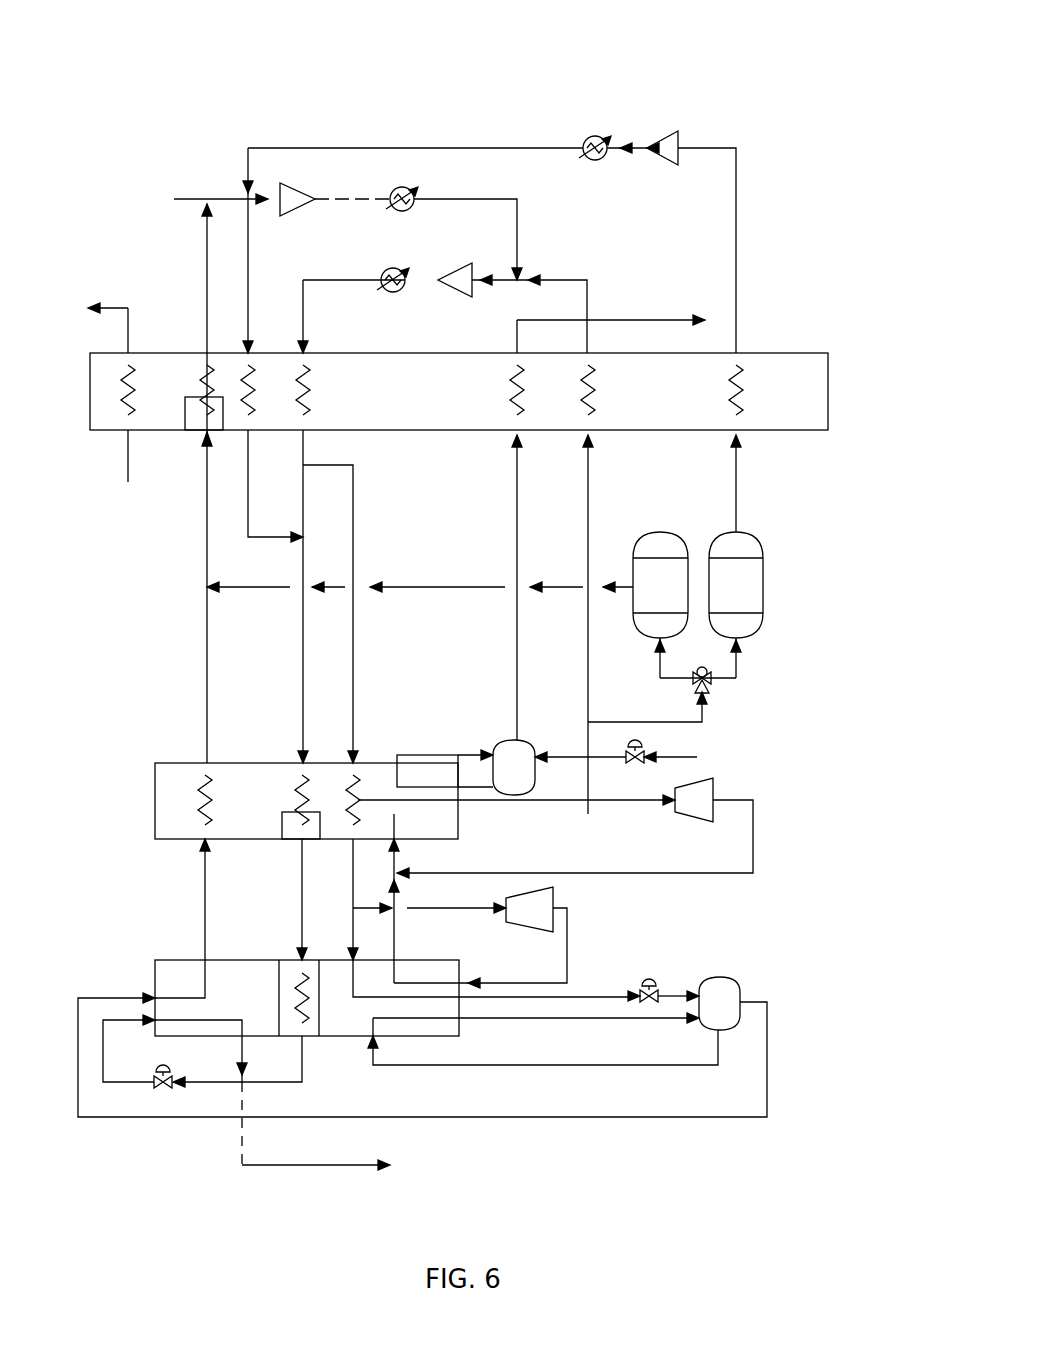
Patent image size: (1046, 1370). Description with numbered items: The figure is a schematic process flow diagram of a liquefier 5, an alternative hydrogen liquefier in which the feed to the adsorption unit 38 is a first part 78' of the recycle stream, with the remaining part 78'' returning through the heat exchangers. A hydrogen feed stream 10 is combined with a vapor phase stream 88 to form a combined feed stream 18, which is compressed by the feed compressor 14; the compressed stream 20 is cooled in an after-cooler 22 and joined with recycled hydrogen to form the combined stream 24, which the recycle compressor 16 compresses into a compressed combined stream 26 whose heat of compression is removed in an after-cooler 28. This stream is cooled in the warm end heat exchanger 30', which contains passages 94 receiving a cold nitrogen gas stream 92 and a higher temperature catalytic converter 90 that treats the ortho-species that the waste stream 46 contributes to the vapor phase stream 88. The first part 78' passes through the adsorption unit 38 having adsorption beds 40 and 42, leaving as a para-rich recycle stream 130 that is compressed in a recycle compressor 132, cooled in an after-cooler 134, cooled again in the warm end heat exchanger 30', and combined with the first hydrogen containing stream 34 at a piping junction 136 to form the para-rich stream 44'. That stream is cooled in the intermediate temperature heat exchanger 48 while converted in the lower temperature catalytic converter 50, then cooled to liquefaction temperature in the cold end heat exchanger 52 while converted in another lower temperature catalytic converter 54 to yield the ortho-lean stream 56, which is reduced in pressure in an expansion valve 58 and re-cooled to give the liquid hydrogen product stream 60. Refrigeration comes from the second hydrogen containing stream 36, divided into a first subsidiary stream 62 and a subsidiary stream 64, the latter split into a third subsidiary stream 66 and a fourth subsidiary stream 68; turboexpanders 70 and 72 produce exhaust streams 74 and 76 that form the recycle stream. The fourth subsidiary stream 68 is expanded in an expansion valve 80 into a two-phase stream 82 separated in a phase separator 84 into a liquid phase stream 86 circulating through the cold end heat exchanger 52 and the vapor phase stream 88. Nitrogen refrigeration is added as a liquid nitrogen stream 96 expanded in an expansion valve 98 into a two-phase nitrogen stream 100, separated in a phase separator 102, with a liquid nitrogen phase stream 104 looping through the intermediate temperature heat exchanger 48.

The liquefier 5 is at (752, 108).
The hydrogen feed stream 10 is at (185, 195).
The combined feed stream 18 is at (227, 195).
The feed compressor 14 is at (297, 216).
The compressed stream 20 is at (319, 214).
The after-cooler 22 is at (416, 190).
The combined stream 24 is at (497, 276).
The after-cooler 28 is at (393, 268).
The compressed combined stream 26 is at (420, 296).
The recycle compressor 16 is at (458, 296).
The after-cooler 134 is at (590, 134).
The recycle compressor 132 is at (664, 132).
The warm end heat exchanger 30' is at (489, 391).
The passages 94 is at (90, 396).
The cold nitrogen gas stream 92 is at (125, 462).
The higher temperature catalytic converter 90 is at (198, 430).
The first hydrogen containing stream 34 is at (305, 498).
The second hydrogen containing stream 36 is at (355, 494).
The piping junction 136 is at (307, 537).
The para-rich stream 44' is at (252, 604).
The waste stream 46 is at (478, 578).
The adsorption bed 40 is at (656, 548).
The adsorption bed 42 is at (768, 592).
The para-rich recycle stream 130 is at (745, 480).
The adsorption unit 38 is at (797, 538).
The first part of the recycle stream 78' is at (679, 698).
The stream 78'' is at (613, 624).
The liquid nitrogen stream 96 is at (698, 756).
The two-phase nitrogen stream 100 is at (563, 738).
The phase separator 102 is at (503, 740).
The liquid nitrogen phase stream 104 is at (430, 752).
The intermediate temperature heat exchanger 48 is at (155, 824).
The first subsidiary stream 62 is at (384, 798).
The lower temperature catalytic converter 50 is at (290, 822).
The expansion valve 98 is at (516, 793).
The turboexpander 70 is at (700, 796).
The exhaust stream 74 is at (682, 872).
The subsidiary stream 64 is at (352, 880).
The third subsidiary stream 66 is at (453, 912).
The turboexpander 72 is at (560, 906).
The exhaust stream 76 is at (560, 960).
The cold end heat exchanger 52 is at (165, 960).
The lower temperature catalytic converter 54 is at (318, 1032).
The ortho-lean stream 56 is at (270, 1082).
The expansion valve 58 is at (170, 1064).
The liquid hydrogen product stream 60 is at (300, 1190).
The fourth subsidiary stream 68 is at (352, 1000).
The expansion valve 80 is at (652, 964).
The two-phase stream 82 is at (690, 966).
The phase separator 84 is at (740, 980).
The liquid phase stream 86 is at (605, 1070).
The vapor phase stream 88 is at (575, 1122).